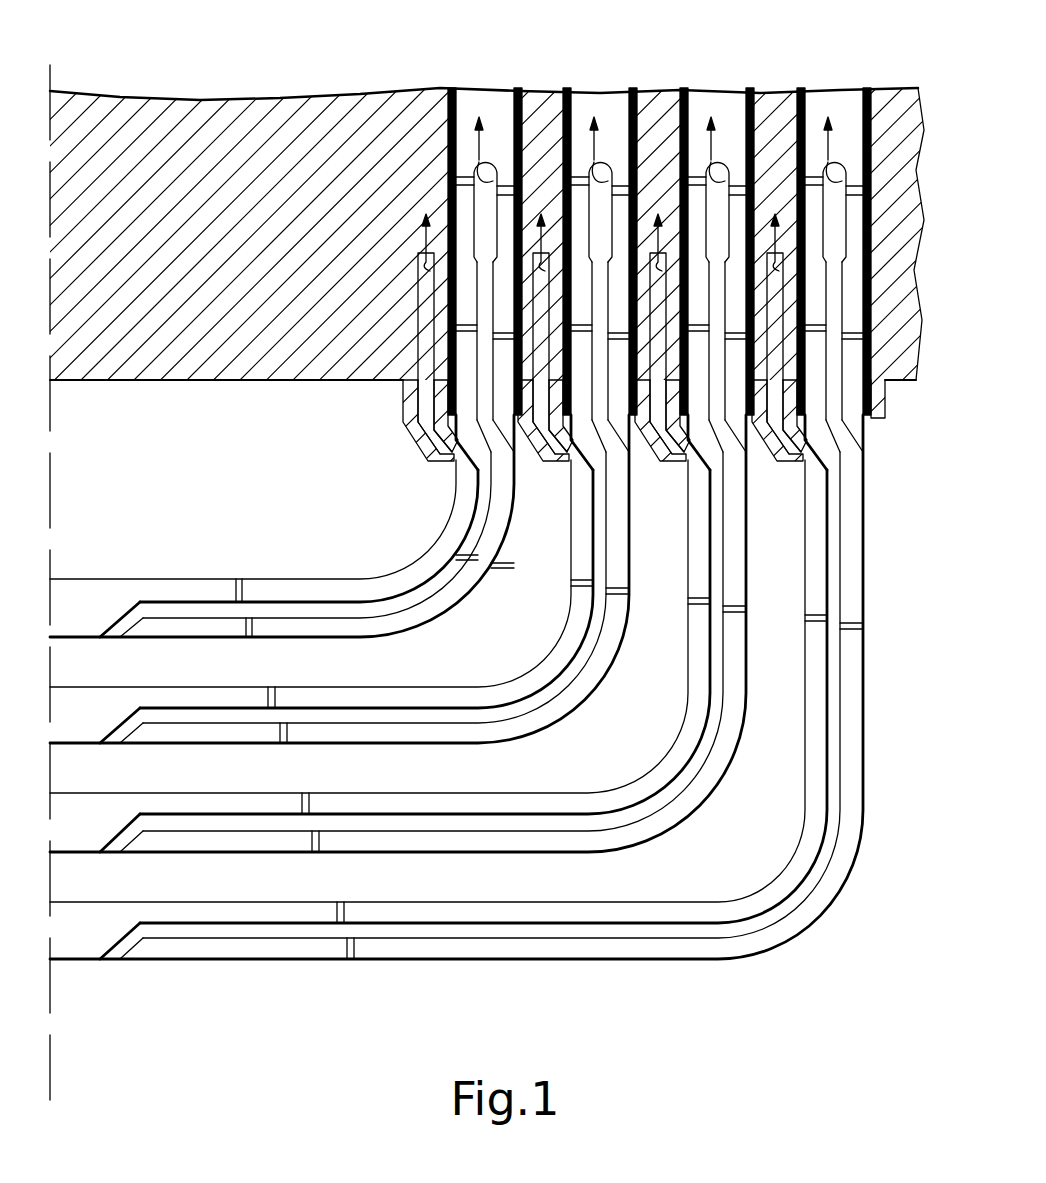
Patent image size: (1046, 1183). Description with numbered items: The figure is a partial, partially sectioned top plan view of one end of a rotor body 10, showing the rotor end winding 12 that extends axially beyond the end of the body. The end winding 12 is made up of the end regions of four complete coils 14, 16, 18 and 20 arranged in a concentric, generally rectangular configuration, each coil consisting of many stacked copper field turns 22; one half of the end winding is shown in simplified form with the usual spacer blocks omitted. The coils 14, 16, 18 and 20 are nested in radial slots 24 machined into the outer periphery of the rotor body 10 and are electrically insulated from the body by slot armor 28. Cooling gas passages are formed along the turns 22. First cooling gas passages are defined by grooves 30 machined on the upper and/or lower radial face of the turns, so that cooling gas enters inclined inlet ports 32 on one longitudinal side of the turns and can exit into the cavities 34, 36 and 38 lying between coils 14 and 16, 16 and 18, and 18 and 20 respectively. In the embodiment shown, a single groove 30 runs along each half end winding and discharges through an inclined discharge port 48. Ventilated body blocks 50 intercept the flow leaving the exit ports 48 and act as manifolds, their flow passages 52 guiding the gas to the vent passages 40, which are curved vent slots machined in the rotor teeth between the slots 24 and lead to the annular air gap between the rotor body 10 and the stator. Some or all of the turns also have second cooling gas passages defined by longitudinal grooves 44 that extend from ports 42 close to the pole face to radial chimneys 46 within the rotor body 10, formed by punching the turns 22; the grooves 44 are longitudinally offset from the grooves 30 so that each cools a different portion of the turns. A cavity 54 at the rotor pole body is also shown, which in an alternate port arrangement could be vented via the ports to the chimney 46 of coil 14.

The rotor body 10 is at (523, 239).
The rotor end winding 12 is at (739, 974).
The coil 14 is at (305, 578).
The coil 16 is at (528, 669).
The coil 18 is at (653, 764).
The coil 20 is at (725, 888).
The field turns 22 is at (683, 815).
The radial slots 24 is at (492, 92).
The slot armor 28 is at (519, 92).
The grooves 30 is at (278, 612).
The ports 32 is at (115, 640).
The cavity 34 is at (353, 676).
The cavity 36 is at (468, 783).
The cavity 38 is at (553, 891).
The vent passages 40 is at (418, 345).
The ports 42 is at (503, 442).
The longitudinal grooves 44 is at (418, 300).
The radial chimneys 46 is at (478, 214).
The discharge port 48 is at (475, 468).
The ventilated body block 50 is at (420, 445).
The flow passage 52 is at (403, 398).
The cavity 54 is at (183, 541).